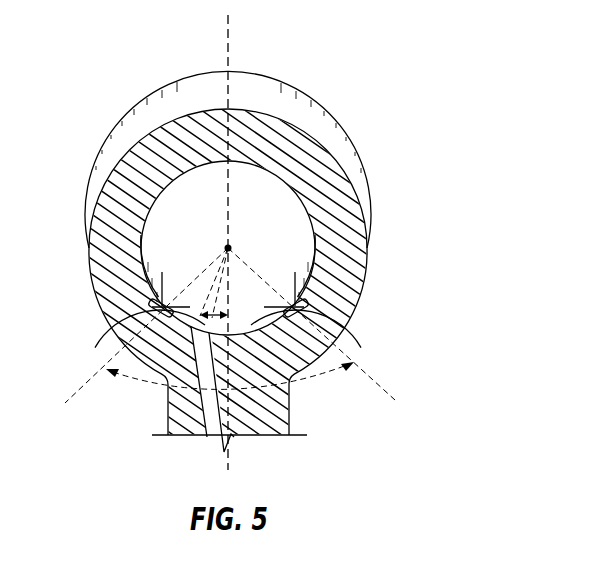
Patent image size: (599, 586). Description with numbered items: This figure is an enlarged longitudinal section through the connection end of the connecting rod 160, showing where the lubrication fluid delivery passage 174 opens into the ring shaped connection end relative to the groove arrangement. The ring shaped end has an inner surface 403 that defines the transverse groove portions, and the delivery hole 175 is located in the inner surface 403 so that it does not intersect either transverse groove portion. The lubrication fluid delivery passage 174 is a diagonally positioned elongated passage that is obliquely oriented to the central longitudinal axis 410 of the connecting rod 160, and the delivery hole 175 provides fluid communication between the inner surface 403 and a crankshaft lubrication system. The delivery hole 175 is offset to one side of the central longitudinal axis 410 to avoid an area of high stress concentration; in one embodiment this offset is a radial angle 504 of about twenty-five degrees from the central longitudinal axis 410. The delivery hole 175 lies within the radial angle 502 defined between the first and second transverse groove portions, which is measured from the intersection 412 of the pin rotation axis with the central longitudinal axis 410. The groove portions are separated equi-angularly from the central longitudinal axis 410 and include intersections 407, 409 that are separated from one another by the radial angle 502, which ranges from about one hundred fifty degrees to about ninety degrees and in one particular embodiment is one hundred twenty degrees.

The connecting rod 160 is at (363, 55).
The central longitudinal axis 410 is at (228, 58).
The inner surface 403 is at (211, 163).
The intersection 412 is at (225, 248).
The radial angle 504 is at (223, 312).
The intersection 407 is at (150, 313).
The intersection 409 is at (308, 318).
The lubrication fluid delivery passage 174 is at (208, 395).
The delivery hole 175 is at (141, 340).
The radial angle 502 is at (322, 377).